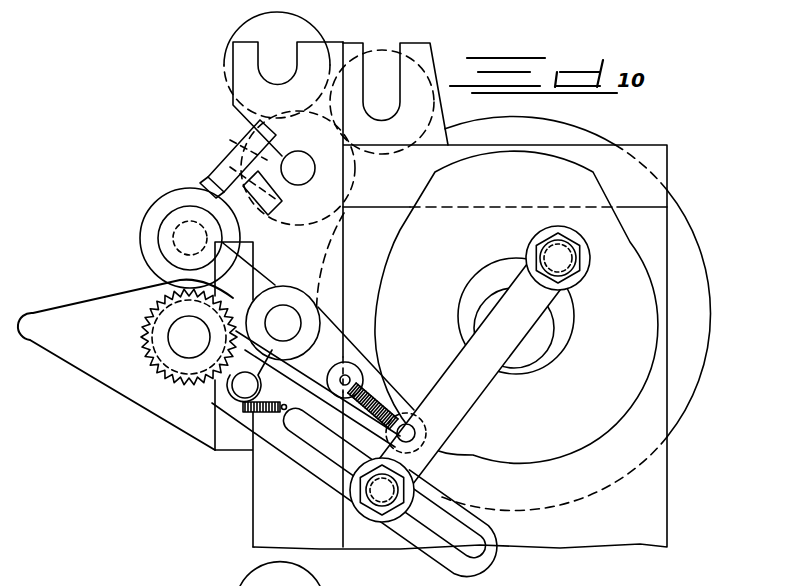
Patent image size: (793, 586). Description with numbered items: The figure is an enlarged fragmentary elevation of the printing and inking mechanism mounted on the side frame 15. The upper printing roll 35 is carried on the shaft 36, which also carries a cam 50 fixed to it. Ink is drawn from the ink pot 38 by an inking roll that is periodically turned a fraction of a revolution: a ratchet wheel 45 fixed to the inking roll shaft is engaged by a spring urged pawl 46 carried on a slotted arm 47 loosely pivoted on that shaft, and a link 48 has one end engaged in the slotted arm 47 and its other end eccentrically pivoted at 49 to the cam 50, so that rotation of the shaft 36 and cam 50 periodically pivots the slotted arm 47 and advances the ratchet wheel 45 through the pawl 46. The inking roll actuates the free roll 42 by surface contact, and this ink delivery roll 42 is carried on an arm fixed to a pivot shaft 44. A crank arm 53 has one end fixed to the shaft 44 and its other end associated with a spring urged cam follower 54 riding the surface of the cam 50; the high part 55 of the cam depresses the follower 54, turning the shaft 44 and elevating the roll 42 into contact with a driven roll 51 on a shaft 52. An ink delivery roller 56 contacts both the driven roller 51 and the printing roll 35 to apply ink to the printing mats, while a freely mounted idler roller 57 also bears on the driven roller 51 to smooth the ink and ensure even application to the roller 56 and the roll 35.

The side frame 15 is at (637, 183).
The upper roll 35 is at (700, 300).
The shaft 36 is at (537, 335).
The ink pot 38 is at (110, 353).
The free roll 42 is at (160, 242).
The pivot shaft 44 is at (284, 322).
The ratchet wheel 45 is at (172, 358).
The spring urged pawl 46 is at (258, 392).
The slotted arm 47 is at (325, 455).
The link 48 is at (465, 398).
The eccentric pivot 49 is at (562, 260).
The cam 50 is at (665, 362).
The driven roll 51 is at (255, 150).
The shaft 52 is at (316, 180).
The crank arm 53 is at (345, 330).
The spring urged cam follower 54 is at (408, 420).
The high part 55 is at (547, 153).
The ink delivery roller 56 is at (385, 67).
The idler roller 57 is at (293, 32).